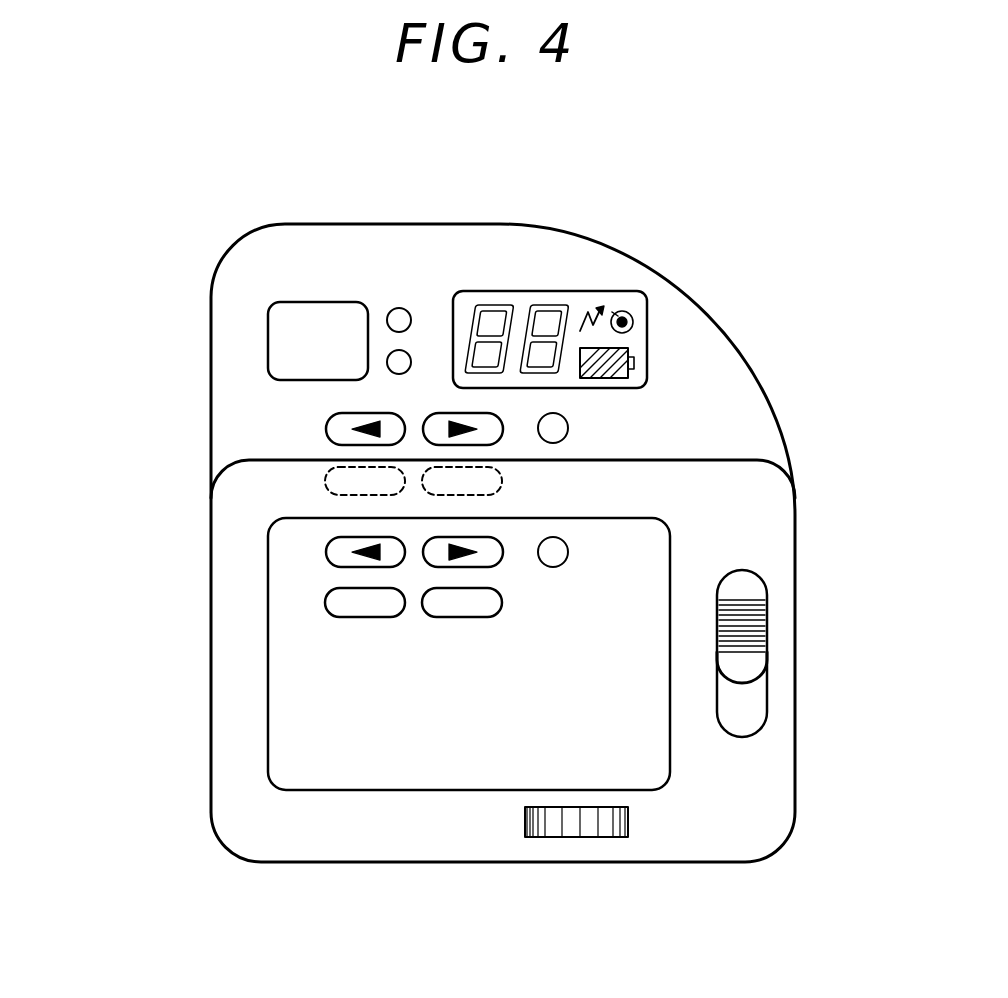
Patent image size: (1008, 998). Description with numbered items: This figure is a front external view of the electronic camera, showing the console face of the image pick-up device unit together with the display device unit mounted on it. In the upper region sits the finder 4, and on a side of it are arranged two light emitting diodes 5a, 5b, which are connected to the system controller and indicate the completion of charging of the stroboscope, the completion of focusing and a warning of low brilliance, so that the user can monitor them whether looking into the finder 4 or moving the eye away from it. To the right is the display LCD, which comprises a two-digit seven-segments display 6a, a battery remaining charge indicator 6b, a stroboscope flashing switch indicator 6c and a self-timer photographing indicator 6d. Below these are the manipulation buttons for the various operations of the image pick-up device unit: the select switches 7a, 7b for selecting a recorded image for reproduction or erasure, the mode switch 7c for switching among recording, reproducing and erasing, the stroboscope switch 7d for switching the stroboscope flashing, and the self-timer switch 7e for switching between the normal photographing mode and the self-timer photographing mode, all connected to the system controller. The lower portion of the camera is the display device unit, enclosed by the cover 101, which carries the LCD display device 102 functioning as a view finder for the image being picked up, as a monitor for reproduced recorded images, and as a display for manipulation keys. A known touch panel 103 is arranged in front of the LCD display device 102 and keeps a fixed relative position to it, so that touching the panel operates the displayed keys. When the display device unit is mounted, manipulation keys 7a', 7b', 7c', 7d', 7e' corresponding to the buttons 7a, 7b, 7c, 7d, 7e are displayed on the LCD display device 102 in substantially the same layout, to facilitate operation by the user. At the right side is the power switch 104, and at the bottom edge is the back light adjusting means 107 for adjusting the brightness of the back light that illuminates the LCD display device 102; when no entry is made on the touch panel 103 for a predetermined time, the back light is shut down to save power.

The finder 4 is at (318, 323).
The light emitting diode 5a is at (399, 310).
The light emitting diode 5b is at (403, 362).
The 2-digit 7-segments display 6a is at (522, 311).
The battery remaining charge indicator 6b is at (628, 349).
The stroboscope flashing switch indicator 6c is at (590, 318).
The self-timer photographing indicator 6d is at (636, 318).
The select switch 7a is at (277, 429).
The select switch 7b is at (463, 314).
The mode switch 7c is at (691, 406).
The stroboscope switch 7d is at (277, 476).
The self-timer switch 7e is at (325, 494).
The manipulation key 7a' is at (276, 563).
The manipulation key 7b' is at (643, 530).
The manipulation key 7c' is at (703, 548).
The manipulation key 7d' is at (276, 619).
The manipulation key 7e' is at (321, 646).
The cover 101 is at (768, 835).
The LCD display device 102 is at (367, 659).
The touch panel 103 is at (287, 742).
The power switch 104 is at (750, 658).
The back light adjusting means 107 is at (553, 830).